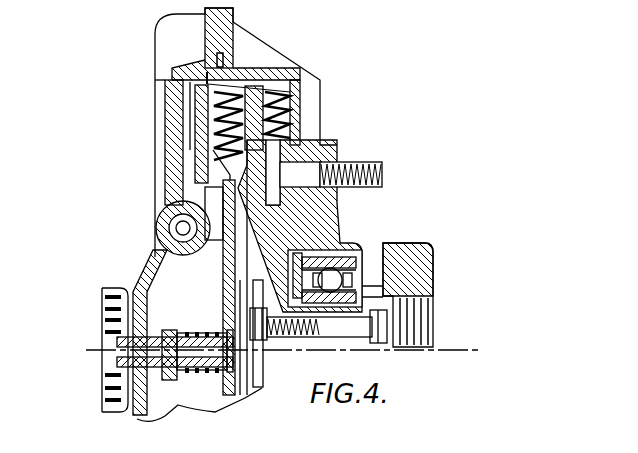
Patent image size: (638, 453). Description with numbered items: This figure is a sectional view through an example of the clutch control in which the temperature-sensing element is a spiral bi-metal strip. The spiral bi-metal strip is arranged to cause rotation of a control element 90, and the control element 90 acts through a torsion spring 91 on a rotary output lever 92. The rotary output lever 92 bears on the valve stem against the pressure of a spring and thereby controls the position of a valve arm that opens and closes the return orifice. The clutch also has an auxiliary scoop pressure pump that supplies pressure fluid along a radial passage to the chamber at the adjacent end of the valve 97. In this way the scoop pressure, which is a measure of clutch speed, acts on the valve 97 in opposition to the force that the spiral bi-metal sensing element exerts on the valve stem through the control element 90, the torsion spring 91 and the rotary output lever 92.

The valve 97 is at (165, 222).
The rotary output lever 92 is at (222, 283).
The control element 90 is at (170, 382).
The torsion spring 91 is at (199, 380).